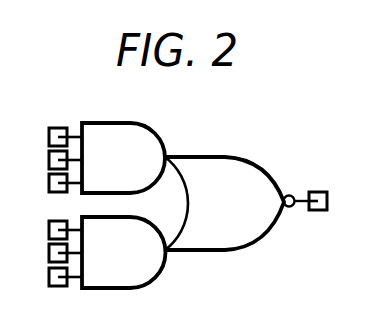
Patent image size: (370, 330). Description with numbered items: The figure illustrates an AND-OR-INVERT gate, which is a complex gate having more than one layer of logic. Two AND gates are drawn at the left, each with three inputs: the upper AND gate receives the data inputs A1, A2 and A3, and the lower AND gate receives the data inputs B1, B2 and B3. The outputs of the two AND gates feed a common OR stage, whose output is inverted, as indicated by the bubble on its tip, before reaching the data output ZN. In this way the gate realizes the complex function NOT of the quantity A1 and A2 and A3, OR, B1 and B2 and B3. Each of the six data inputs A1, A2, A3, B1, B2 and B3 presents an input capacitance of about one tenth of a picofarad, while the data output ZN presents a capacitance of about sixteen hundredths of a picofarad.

The data input A1 is at (46, 138).
The data input A2 is at (46, 161).
The data input A3 is at (46, 184).
The data input B1 is at (46, 231).
The data input B2 is at (46, 254).
The data input B3 is at (46, 278).
The data output ZN is at (324, 220).